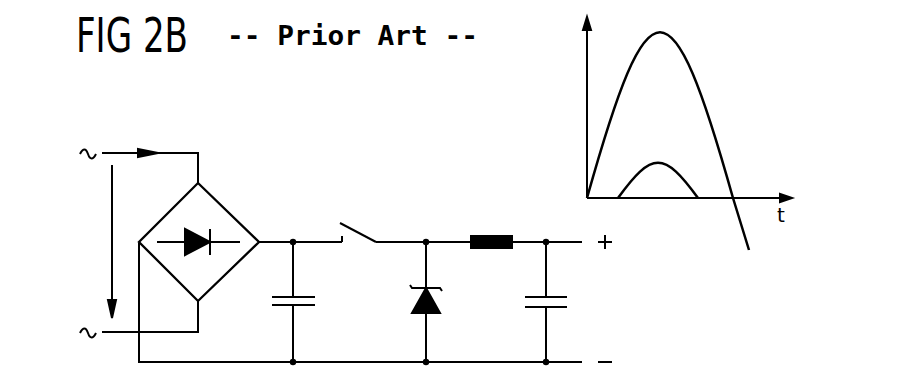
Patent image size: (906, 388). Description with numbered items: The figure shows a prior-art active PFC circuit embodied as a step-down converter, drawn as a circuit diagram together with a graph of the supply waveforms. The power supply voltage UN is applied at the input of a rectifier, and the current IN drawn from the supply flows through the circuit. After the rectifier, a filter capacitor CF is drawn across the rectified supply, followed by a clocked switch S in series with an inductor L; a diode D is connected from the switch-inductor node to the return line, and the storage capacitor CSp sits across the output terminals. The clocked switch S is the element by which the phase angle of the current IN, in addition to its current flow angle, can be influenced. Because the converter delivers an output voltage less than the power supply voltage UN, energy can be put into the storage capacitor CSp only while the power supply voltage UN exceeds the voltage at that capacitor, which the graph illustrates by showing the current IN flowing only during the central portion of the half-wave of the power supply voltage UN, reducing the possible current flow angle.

The clocked switch S is at (358, 225).
The inductor L is at (488, 233).
The diode D is at (448, 290).
The filter capacitor CF is at (318, 298).
The storage capacitor CSp is at (568, 306).
The power supply voltage UN is at (717, 88).
The current IN is at (668, 130).